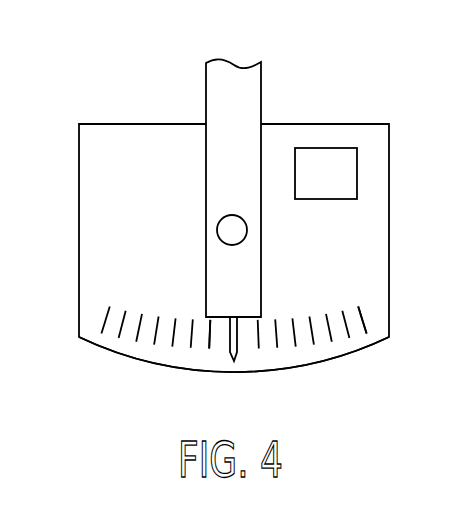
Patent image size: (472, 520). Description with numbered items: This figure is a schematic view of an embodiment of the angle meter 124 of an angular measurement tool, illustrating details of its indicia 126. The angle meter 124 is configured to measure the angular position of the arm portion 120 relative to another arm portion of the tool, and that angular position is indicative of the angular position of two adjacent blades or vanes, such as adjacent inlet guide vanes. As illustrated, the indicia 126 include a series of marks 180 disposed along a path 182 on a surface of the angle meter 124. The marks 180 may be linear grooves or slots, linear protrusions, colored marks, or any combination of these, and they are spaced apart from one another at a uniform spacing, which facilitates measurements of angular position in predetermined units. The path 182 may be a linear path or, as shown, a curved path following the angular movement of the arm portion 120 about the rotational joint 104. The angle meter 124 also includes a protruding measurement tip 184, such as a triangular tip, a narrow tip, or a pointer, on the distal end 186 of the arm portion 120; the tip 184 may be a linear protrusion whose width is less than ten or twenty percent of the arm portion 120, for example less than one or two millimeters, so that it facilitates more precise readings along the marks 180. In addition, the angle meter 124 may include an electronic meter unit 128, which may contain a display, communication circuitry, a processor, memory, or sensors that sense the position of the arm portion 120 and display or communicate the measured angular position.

The rotational joint 104 is at (245, 240).
The arm portion 120 is at (262, 89).
The angle meter 124 is at (65, 267).
The indicia 126 is at (280, 369).
The electronic meter unit 128 is at (325, 148).
The marks 180 is at (138, 333).
The path 182 is at (372, 316).
The measurement tip 184 is at (230, 347).
The distal end 186 is at (205, 312).